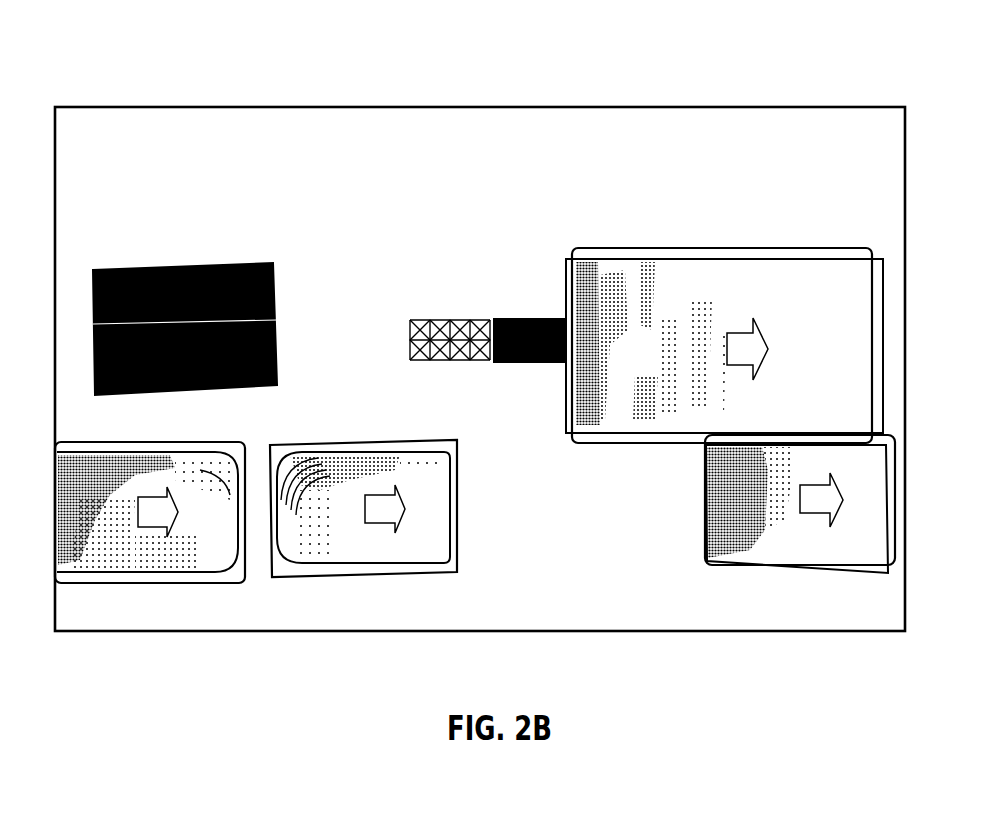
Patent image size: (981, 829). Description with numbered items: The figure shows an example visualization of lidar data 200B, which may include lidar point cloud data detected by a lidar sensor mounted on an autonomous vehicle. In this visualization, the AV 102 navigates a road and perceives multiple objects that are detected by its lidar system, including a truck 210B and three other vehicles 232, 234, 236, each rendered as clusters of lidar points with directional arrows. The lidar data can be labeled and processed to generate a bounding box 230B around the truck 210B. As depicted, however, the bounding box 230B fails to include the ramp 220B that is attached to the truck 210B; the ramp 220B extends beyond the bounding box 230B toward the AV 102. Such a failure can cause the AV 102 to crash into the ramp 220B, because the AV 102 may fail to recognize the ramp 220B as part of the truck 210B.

The visualization of lidar data 200B is at (149, 44).
The AV 102 is at (199, 265).
The truck 210B is at (620, 280).
The ramp 220B is at (470, 318).
The bounding box 230B is at (740, 247).
The vehicle 232 is at (138, 573).
The vehicle 234 is at (337, 573).
The vehicle 236 is at (750, 567).